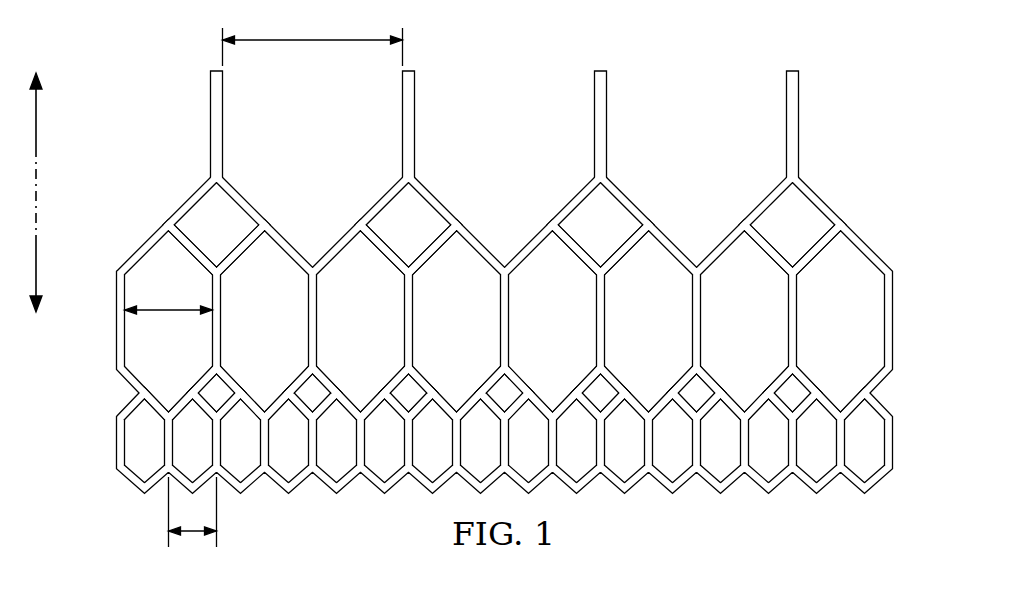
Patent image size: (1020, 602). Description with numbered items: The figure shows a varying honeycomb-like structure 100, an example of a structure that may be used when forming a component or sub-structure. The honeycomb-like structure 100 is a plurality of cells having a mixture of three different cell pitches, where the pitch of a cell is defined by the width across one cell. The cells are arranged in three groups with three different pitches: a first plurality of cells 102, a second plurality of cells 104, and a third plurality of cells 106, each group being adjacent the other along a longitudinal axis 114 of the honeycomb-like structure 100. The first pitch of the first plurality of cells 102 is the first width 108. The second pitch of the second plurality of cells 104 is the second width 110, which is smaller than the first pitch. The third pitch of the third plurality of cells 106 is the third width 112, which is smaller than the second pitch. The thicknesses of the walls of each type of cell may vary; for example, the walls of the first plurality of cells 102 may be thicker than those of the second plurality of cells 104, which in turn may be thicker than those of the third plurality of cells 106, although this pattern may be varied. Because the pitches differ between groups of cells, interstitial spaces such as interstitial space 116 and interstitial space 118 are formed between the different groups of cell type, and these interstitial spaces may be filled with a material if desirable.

The honeycomb-like structure 100 is at (458, 248).
The first plurality of cells 102 is at (187, 113).
The second plurality of cells 104 is at (113, 335).
The third plurality of cells 106 is at (113, 443).
The width W 108 is at (301, 65).
The width W2 110 is at (158, 338).
The width W3 112 is at (181, 561).
The longitudinal axis 114 is at (37, 193).
The interstitial space 116 is at (614, 212).
The interstitial space 118 is at (800, 392).